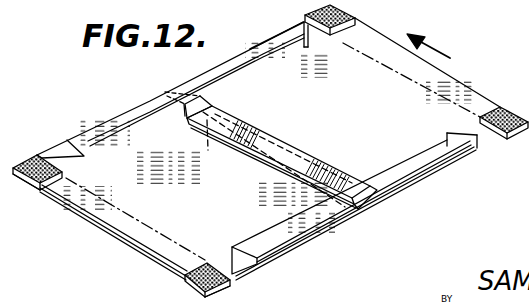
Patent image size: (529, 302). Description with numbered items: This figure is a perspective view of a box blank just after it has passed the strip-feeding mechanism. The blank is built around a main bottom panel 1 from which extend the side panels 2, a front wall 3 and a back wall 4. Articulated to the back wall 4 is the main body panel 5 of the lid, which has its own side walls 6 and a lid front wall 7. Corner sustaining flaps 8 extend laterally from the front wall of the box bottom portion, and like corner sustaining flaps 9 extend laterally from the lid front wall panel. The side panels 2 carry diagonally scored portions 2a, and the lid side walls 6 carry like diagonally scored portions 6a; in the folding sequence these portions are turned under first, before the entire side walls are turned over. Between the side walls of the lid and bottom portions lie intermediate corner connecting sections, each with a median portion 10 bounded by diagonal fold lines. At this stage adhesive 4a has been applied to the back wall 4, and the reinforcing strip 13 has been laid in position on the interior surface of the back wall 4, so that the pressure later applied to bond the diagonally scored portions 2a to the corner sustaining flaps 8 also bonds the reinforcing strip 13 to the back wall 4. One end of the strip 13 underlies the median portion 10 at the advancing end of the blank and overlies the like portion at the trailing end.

The main bottom panel 1 is at (220, 136).
The side panels 2 is at (272, 42).
The diagonally scored portions 2a is at (308, 35).
The front wall 3 is at (421, 67).
The back wall 4 is at (292, 177).
The adhesive 4a is at (277, 159).
The main body panel of the lid 5 is at (177, 171).
The lid side walls 6 is at (125, 117).
The diagonally scored portions of lid side walls 6a is at (86, 156).
The lid front wall 7 is at (109, 227).
The corner sustaining flaps 8 is at (340, 9).
The corner sustaining flaps of the lid 9 is at (40, 185).
The median portion 10 is at (184, 97).
The reinforcing strip 13 is at (263, 132).